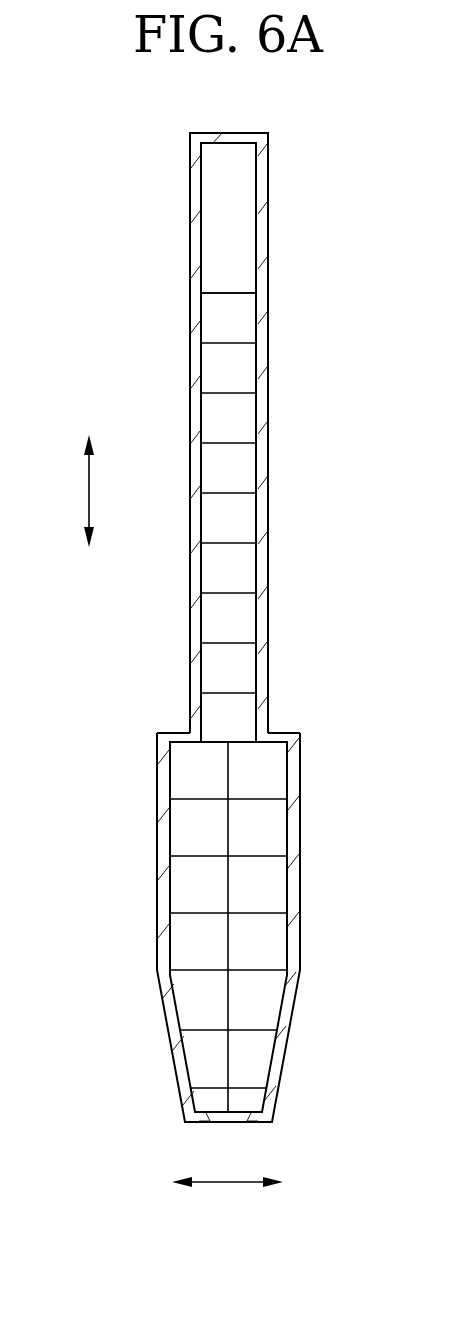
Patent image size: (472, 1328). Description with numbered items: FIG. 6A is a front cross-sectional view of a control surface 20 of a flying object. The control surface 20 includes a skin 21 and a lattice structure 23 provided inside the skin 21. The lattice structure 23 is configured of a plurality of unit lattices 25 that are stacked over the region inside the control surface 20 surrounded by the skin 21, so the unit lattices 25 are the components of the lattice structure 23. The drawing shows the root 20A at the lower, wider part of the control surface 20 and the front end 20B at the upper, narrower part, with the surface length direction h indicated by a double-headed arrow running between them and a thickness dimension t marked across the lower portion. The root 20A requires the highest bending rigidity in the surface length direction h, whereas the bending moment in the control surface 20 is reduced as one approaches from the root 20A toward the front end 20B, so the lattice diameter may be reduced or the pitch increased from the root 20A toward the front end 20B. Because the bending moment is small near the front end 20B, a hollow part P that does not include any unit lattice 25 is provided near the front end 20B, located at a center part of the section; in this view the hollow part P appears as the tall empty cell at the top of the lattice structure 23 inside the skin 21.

The control surface 20 is at (262, 627).
The root 20A is at (270, 713).
The front end 20B is at (268, 176).
The skin 21 is at (265, 545).
The lattice structure 23 is at (262, 473).
The unit lattice 25 is at (212, 318).
The hollow part P is at (232, 230).
The surface length direction h is at (85, 490).
The thickness t is at (225, 1185).